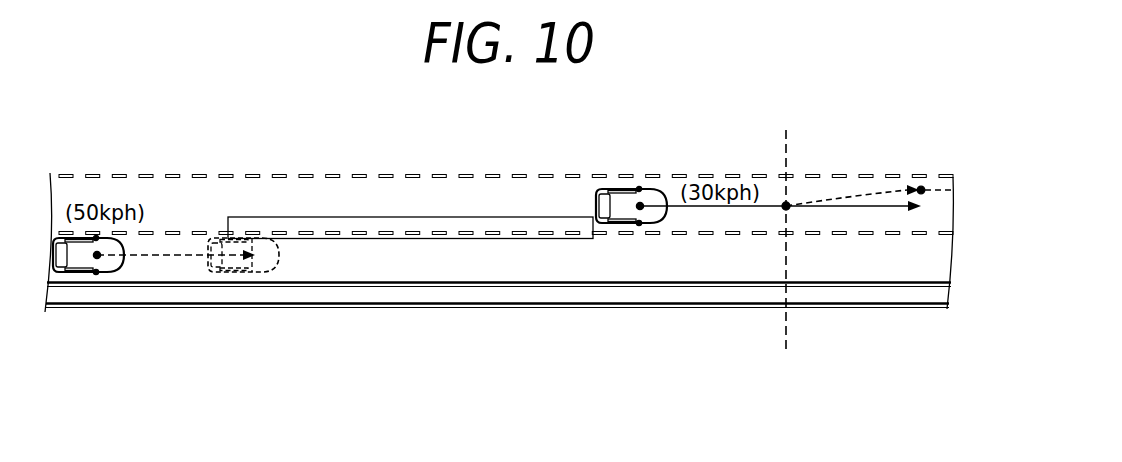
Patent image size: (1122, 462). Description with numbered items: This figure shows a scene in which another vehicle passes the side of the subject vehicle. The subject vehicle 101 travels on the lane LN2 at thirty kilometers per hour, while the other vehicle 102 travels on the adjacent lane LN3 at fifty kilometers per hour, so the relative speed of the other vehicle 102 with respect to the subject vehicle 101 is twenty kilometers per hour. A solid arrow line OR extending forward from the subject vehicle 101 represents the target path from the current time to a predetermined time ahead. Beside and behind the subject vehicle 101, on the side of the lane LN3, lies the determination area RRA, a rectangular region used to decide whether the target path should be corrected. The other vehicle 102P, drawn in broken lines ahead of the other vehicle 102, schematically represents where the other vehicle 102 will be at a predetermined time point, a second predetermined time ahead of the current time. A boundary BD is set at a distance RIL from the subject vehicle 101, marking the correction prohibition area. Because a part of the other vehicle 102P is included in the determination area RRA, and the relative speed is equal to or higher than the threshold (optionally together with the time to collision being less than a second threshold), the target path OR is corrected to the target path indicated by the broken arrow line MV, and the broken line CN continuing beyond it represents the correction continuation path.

The subject vehicle 101 is at (629, 192).
The other vehicle 102 is at (76, 265).
The other vehicle at predetermined time point 102P is at (260, 271).
The lane LN2 is at (488, 190).
The lane LN3 is at (723, 275).
The determination area RRA is at (553, 240).
The target path OR is at (698, 208).
The boundary BD is at (786, 131).
The corrected target path MV is at (856, 194).
The correction continuation path CN is at (933, 190).